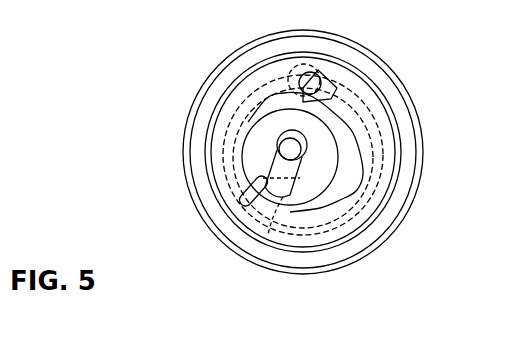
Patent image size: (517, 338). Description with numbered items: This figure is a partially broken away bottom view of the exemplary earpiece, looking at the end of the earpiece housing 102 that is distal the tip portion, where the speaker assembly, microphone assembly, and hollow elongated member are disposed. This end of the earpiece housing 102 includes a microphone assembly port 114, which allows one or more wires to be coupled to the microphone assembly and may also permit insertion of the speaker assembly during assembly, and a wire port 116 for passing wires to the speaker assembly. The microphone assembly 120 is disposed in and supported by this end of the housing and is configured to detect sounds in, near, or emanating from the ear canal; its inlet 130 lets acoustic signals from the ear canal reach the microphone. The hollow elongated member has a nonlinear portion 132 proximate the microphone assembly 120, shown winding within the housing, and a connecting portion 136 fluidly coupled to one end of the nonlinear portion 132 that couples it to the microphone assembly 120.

The earpiece housing 102 is at (372, 52).
The microphone assembly port 114 is at (253, 117).
The wire port 116 is at (250, 203).
The microphone assembly 120 is at (282, 110).
The inlet 130 is at (275, 150).
The nonlinear portion 132 is at (385, 127).
The connecting portion 136 is at (305, 171).